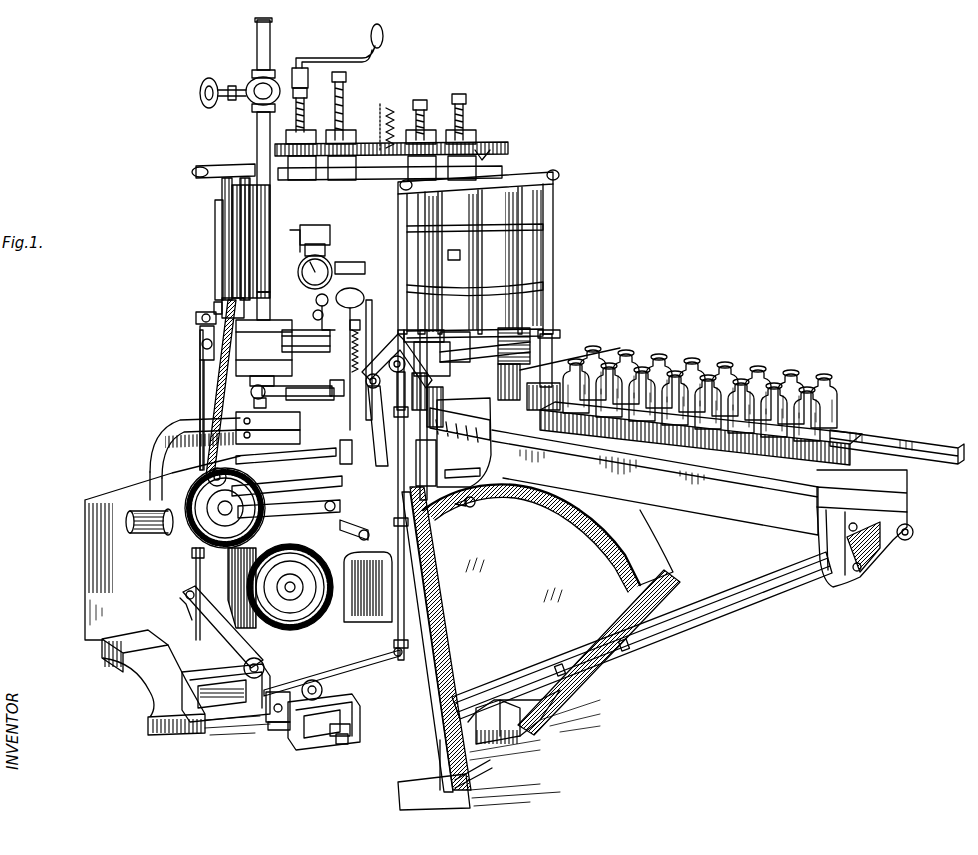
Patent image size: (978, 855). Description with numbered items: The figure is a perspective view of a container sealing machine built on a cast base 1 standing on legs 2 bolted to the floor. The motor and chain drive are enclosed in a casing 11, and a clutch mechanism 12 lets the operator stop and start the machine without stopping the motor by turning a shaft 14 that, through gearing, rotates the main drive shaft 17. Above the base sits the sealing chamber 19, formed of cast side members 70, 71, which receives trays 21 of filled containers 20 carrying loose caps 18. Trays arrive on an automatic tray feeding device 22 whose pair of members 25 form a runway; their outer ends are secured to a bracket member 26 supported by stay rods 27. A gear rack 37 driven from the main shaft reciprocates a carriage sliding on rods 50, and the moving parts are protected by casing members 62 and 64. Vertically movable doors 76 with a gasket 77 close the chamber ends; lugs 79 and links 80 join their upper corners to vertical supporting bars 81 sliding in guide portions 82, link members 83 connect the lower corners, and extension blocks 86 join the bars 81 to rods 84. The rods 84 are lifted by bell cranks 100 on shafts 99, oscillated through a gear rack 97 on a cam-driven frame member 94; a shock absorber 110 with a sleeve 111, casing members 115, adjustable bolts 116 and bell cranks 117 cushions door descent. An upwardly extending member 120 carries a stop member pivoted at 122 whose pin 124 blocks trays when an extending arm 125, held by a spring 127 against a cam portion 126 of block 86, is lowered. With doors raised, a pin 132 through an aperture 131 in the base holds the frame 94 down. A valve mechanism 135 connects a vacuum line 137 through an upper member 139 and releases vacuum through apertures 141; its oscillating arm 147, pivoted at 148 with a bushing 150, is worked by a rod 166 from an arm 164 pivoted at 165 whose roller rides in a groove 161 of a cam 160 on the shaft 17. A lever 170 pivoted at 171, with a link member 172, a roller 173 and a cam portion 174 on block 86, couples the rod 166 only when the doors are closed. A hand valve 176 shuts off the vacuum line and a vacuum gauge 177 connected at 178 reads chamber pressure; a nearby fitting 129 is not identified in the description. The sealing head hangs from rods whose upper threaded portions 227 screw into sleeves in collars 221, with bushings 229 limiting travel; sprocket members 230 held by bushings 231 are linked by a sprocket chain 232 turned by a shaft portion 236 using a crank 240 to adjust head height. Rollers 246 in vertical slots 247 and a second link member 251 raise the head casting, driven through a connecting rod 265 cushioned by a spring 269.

The base 1 is at (434, 606).
The legs 2 is at (165, 702).
The casing 11 is at (104, 590).
The clutch mechanism 12 is at (194, 496).
The shaft 14 is at (160, 528).
The drive shaft 17 is at (305, 614).
The caps 18 is at (760, 366).
The sealing chamber 19 is at (558, 290).
The containers 20 is at (808, 384).
The trays 21 is at (840, 475).
The tray feeding device 22 is at (770, 549).
The members 25 is at (880, 438).
The bracket member 26 is at (868, 570).
The stay rods 27 is at (724, 626).
The gear rack 37 is at (500, 736).
The rods 50 is at (892, 548).
The casing member 62 is at (748, 498).
The casing member 64 is at (648, 524).
The side member 70 is at (398, 420).
The side member 71 is at (560, 350).
The doors 76 is at (222, 230).
The gasket 77 is at (225, 255).
The lugs 79 is at (200, 167).
The links 80 is at (196, 178).
The vertical supporting bars 81 is at (222, 196).
The guide portions 82 is at (433, 341).
The link members 83 is at (196, 318).
The rods 84 is at (212, 406).
The extension blocks 86 is at (200, 340).
The frame member 94 is at (442, 630).
The gear rack 97 is at (386, 660).
The shafts 99 is at (244, 668).
The bell crank 100 is at (190, 616).
The shock absorber 110 is at (276, 738).
The cylindrical sleeve 111 is at (206, 694).
The casing member 115 is at (268, 716).
The bolt 116 is at (338, 746).
The bell crank 117 is at (270, 620).
The upwardly extending member 120 is at (468, 466).
The pivot 122 is at (461, 425).
The pin 124 is at (532, 386).
The extending arm 125 is at (372, 320).
The cam portion 126 is at (485, 337).
The spring 127 is at (464, 506).
The valve 129 is at (316, 302).
The aperture 131 is at (286, 461).
The pin 132 is at (300, 392).
The valve mechanism 135 is at (236, 350).
The vacuum line 137 is at (258, 122).
The upper member 139 is at (222, 306).
The apertures 141 is at (252, 380).
The oscillating arm 147 is at (325, 404).
The pivot 148 is at (300, 380).
The bushing 150 is at (297, 404).
The cam 160 is at (360, 575).
The groove 161 is at (216, 586).
The arm 164 is at (332, 510).
The pivot 165 is at (340, 482).
The rod 166 is at (324, 457).
The lever 170 is at (376, 446).
The pivot 171 is at (272, 428).
The link member 172 is at (366, 540).
The roller 173 is at (364, 274).
The cam portion 174 is at (369, 346).
The hand valve 176 is at (200, 93).
The vacuum gauge 177 is at (333, 270).
The connection 178 is at (364, 298).
The collars 221 is at (280, 150).
The upper threaded portion 227 is at (306, 128).
The bushings 229 is at (292, 100).
The sprocket member 230 is at (288, 144).
The bushing 231 is at (344, 122).
The sprocket chain 232 is at (478, 156).
The shaft portion 236 is at (306, 90).
The crank 240 is at (365, 63).
The roller 246 is at (330, 240).
The vertical slot 247 is at (300, 254).
The second link member 251 is at (378, 144).
The connecting rod 265 is at (382, 110).
The spring 269 is at (370, 150).